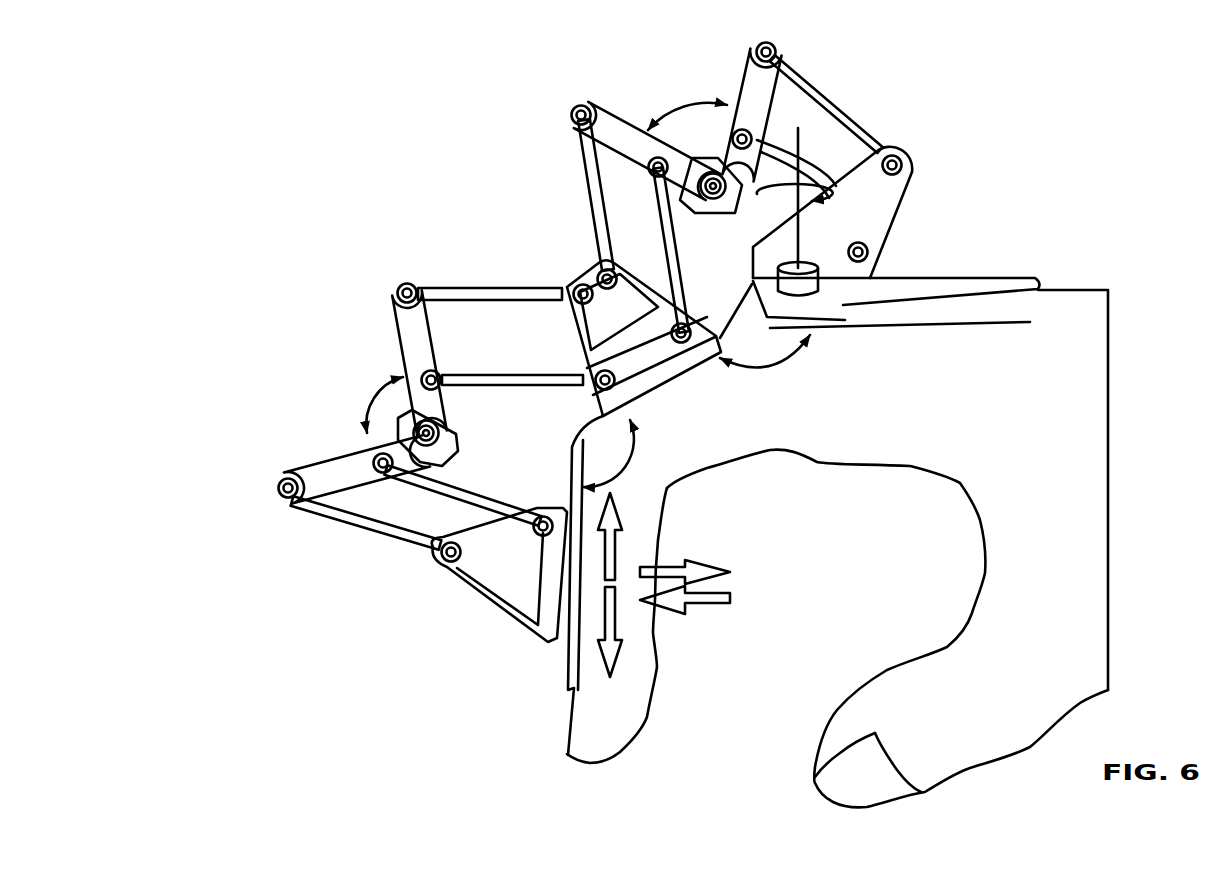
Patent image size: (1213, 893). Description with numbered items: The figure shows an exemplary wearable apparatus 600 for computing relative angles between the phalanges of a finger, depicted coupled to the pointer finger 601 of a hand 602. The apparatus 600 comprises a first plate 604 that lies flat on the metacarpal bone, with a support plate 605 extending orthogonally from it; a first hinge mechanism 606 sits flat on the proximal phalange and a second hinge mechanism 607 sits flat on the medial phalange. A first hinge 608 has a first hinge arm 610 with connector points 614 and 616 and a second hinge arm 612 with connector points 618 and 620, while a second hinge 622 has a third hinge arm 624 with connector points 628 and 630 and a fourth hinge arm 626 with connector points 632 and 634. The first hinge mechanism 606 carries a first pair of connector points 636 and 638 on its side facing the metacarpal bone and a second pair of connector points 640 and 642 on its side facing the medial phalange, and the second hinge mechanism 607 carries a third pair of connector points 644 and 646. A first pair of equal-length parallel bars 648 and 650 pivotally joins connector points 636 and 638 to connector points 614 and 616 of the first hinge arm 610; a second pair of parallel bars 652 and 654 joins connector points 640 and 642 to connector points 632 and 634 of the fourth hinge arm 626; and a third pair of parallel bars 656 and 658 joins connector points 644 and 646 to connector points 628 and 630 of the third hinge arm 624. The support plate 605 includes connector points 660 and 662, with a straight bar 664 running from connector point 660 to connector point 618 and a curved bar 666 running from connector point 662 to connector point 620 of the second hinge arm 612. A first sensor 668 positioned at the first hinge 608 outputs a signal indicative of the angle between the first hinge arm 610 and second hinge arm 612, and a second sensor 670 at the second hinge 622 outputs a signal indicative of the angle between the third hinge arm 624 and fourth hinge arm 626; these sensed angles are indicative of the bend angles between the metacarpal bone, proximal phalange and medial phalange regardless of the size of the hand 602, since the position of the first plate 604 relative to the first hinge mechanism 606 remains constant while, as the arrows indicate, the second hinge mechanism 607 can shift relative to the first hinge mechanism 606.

The apparatus 600 is at (297, 128).
The pointer finger 601 is at (705, 487).
The hand 602 is at (1011, 394).
The first plate 604 is at (948, 280).
The support plate 605 is at (908, 193).
The first hinge mechanism 606 is at (660, 386).
The second hinge mechanism 607 is at (518, 628).
The first hinge 608 is at (590, 78).
The first hinge arm 610 is at (592, 103).
The second hinge arm 612 is at (782, 50).
The connector point 614 is at (570, 118).
The connector point 616 is at (658, 177).
The connector point 618 is at (753, 50).
The connector point 620 is at (733, 137).
The second hinge 622 is at (355, 330).
The third hinge arm 624 is at (312, 470).
The fourth hinge arm 626 is at (432, 325).
The connector point 628 is at (282, 497).
The connector point 630 is at (370, 460).
The connector point 632 is at (405, 283).
The connector point 634 is at (443, 390).
The connector point 636 is at (600, 272).
The connector point 638 is at (692, 325).
The connector point 640 is at (575, 303).
The connector point 642 is at (600, 372).
The connector point 644 is at (450, 565).
The connector point 646 is at (537, 518).
The parallel bar 648 is at (582, 190).
The parallel bar 650 is at (662, 258).
The parallel bar 652 is at (470, 285).
The parallel bar 654 is at (517, 373).
The parallel bar 656 is at (395, 538).
The parallel bar 658 is at (457, 502).
The connector point 660 is at (897, 158).
The connector point 662 is at (868, 250).
The straight bar 664 is at (822, 105).
The curved bar 666 is at (778, 140).
The first sensor 668 is at (711, 216).
The second sensor 670 is at (456, 444).